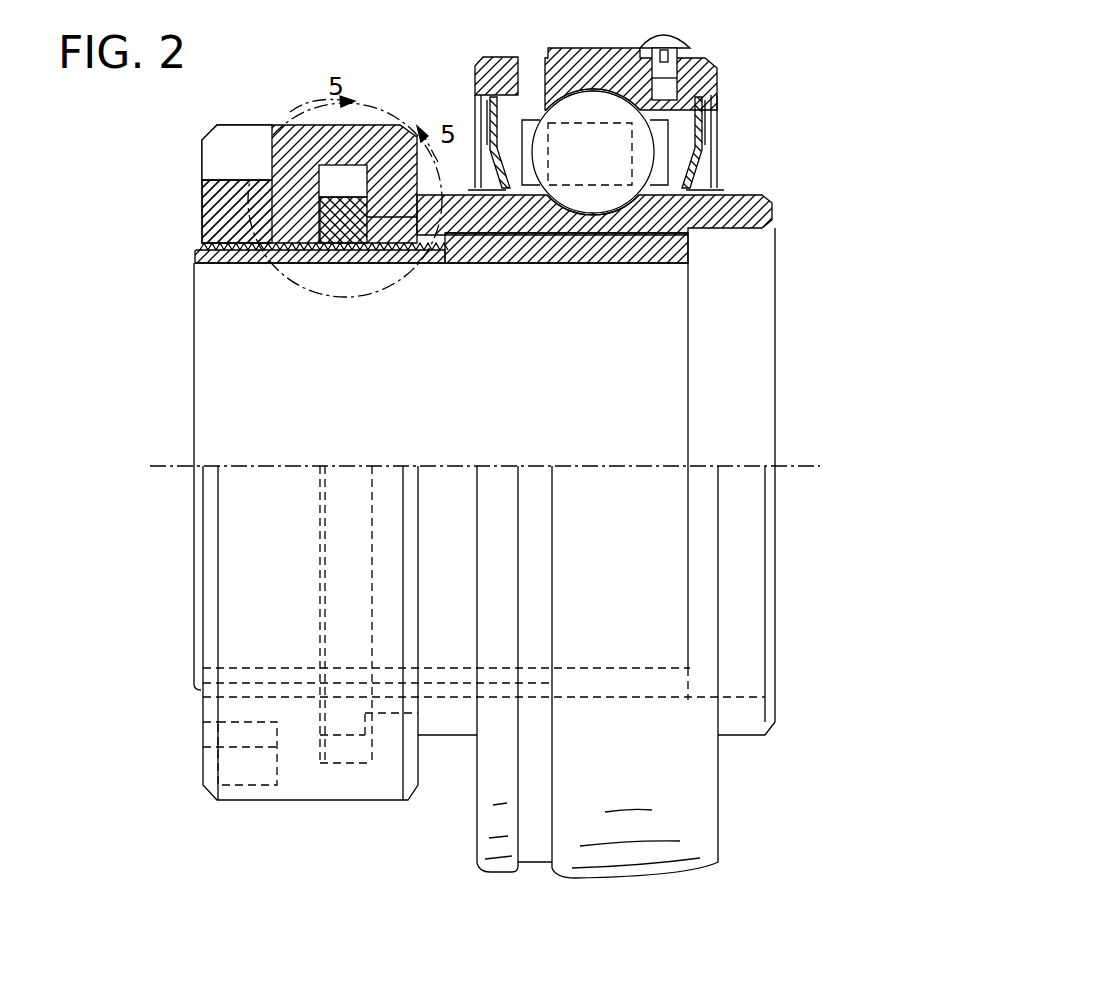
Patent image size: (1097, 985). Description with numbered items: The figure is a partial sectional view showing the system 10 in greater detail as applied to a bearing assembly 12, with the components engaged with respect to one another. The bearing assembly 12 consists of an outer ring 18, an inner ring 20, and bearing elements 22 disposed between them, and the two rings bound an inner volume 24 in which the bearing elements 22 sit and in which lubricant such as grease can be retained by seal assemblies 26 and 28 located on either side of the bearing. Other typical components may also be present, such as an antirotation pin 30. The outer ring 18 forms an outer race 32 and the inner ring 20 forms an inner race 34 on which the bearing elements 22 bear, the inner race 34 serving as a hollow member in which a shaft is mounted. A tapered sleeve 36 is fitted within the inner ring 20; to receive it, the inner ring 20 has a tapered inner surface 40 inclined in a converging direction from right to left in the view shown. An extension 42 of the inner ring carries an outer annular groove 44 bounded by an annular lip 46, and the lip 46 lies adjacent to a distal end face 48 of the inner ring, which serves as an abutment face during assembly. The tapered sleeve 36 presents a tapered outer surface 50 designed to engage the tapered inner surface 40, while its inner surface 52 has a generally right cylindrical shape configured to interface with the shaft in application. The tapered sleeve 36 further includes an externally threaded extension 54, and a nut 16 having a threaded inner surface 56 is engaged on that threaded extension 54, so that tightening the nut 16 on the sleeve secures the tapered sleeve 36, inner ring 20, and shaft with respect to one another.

The system 10 is at (302, 838).
The bearing assembly 12 is at (640, 878).
The nut 16 is at (240, 803).
The outer ring 18 is at (592, 46).
The inner ring 20 is at (773, 207).
The bearing elements 22 is at (647, 177).
The inner volume 24 is at (665, 155).
The seal assembly 26 is at (712, 128).
The seal assembly 28 is at (478, 112).
The antirotation pin 30 is at (683, 36).
The outer race 32 is at (600, 92).
The inner race 34 is at (593, 214).
The tapered sleeve 36 is at (690, 264).
The tapered inner surface 40 is at (495, 265).
The extension 42 is at (453, 265).
The outer annular groove 44 is at (396, 232).
The annular lip 46 is at (343, 200).
The end face 48 is at (228, 263).
The tapered outer surface 50 is at (545, 234).
The inner surface 52 is at (647, 265).
The externally threaded extension 54 is at (213, 237).
The threaded inner surface 56 is at (252, 237).